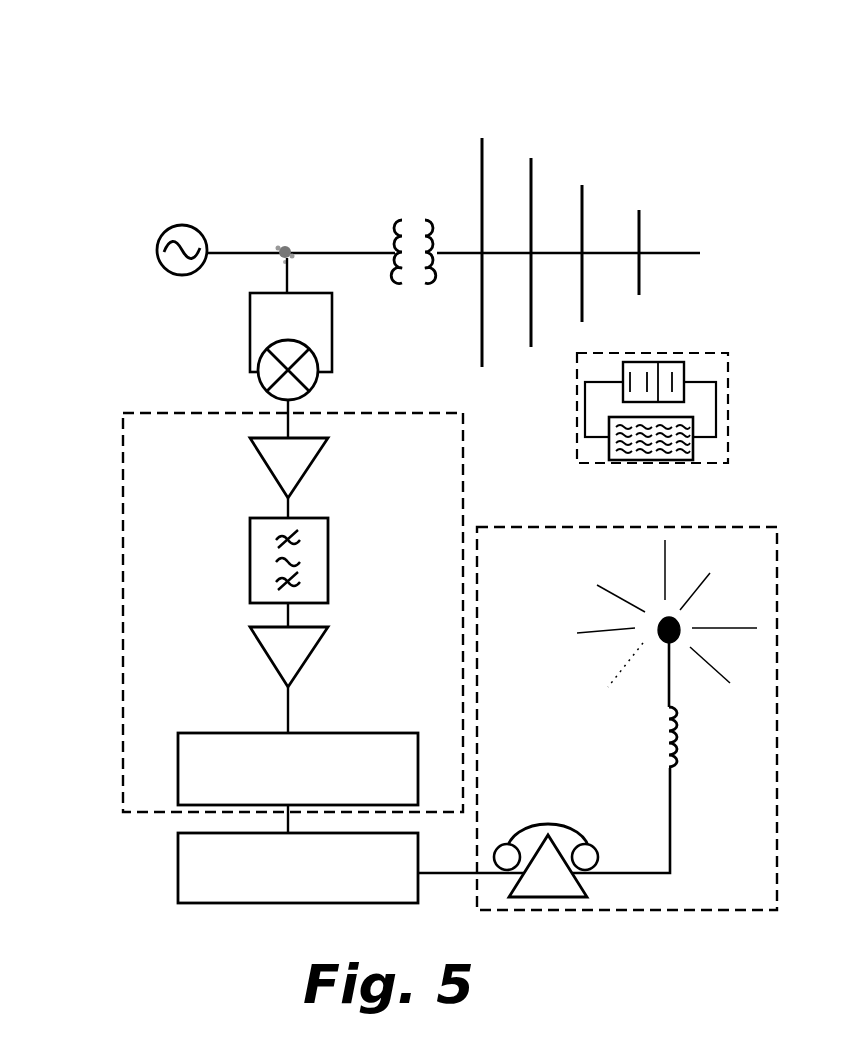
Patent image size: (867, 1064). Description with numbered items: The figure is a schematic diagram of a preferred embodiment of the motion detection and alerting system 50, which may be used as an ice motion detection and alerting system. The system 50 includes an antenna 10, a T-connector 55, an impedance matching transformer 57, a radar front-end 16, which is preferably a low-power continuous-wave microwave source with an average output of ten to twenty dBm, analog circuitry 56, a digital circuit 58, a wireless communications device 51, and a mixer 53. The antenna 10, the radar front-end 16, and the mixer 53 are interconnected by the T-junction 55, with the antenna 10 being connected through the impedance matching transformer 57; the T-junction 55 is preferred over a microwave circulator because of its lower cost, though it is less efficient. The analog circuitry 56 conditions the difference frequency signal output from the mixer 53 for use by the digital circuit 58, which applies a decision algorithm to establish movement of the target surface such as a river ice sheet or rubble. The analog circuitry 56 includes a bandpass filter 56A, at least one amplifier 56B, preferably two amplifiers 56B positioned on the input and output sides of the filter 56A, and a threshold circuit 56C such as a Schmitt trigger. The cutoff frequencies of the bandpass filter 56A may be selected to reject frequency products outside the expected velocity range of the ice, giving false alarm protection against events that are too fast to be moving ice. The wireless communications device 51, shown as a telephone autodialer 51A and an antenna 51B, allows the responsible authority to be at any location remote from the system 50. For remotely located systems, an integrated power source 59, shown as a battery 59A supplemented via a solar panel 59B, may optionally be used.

The motion detection and alerting system 50 is at (152, 62).
The antenna 10 is at (550, 186).
The radar front-end 16 is at (158, 226).
The T-connector 55 is at (290, 242).
The impedance matching transformer 57 is at (412, 220).
The mixer 53 is at (250, 352).
The analog circuitry 56 is at (121, 466).
The bandpass filter 56A is at (250, 594).
The amplifier 56B is at (315, 462).
The threshold circuit 56C is at (237, 730).
The digital circuit 58 is at (178, 873).
The wireless communications device 51 is at (565, 527).
The telephone autodialer 51A is at (548, 826).
The antenna 51B is at (685, 733).
The integrated power source 59 is at (696, 353).
The battery 59A is at (623, 380).
The solar panel 59B is at (675, 452).